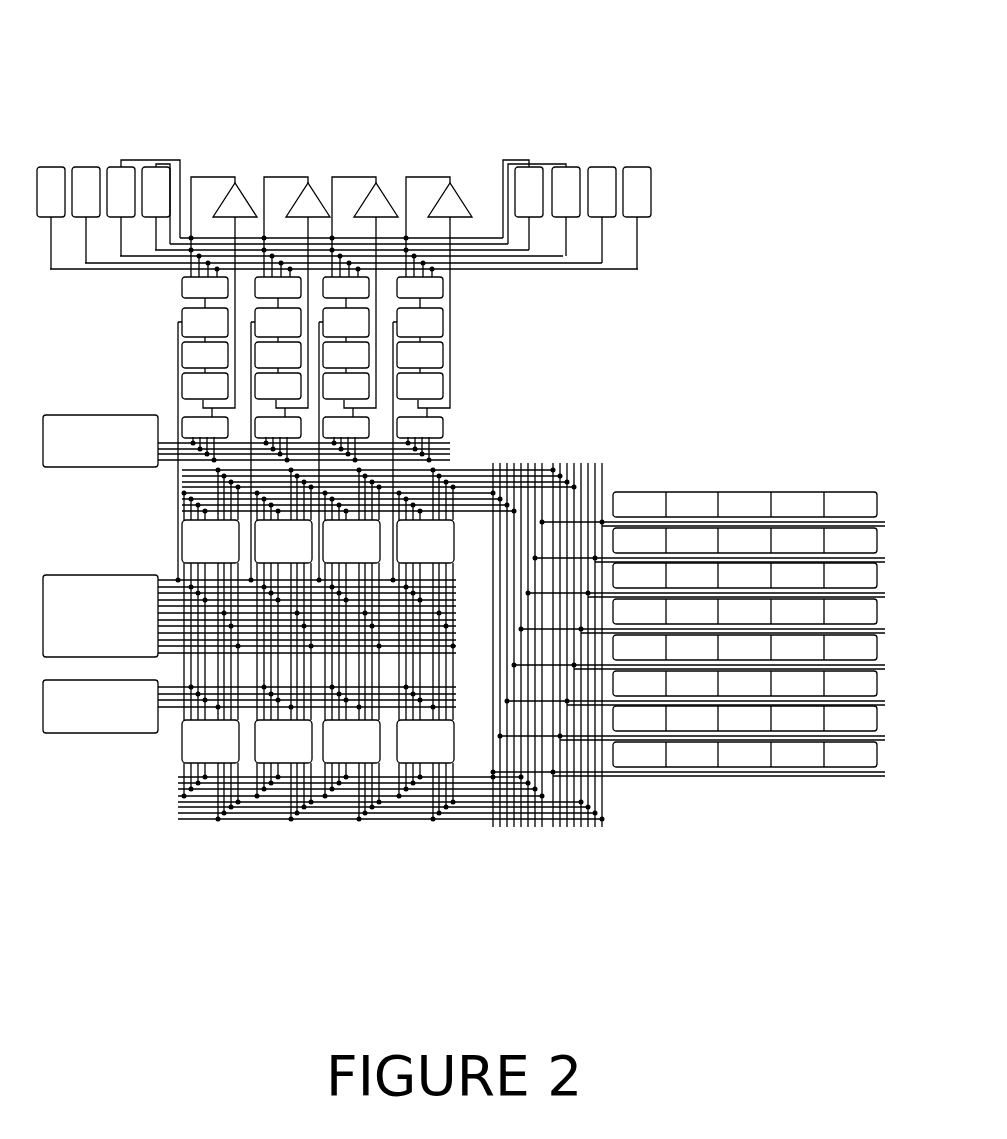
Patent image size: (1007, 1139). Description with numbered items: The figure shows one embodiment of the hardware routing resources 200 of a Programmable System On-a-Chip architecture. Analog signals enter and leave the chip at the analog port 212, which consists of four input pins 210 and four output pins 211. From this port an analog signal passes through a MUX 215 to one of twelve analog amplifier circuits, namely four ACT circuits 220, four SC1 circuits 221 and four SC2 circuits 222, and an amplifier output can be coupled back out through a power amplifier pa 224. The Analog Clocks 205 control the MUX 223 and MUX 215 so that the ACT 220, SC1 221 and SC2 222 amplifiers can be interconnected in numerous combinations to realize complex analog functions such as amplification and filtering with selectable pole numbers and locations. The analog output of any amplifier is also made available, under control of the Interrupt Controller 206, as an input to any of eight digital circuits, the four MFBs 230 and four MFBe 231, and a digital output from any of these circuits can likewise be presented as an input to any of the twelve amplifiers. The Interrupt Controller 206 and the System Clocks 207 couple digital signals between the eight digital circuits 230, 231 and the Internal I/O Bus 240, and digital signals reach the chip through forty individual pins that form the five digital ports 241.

The hardware routing resources 200 is at (48, 14).
The Analog Clocks 205 is at (76, 464).
The Interrupt Controller 206 is at (88, 650).
The System Clocks 207 is at (88, 729).
The input pins 210 is at (60, 167).
The output pins 211 is at (146, 167).
The port 0 212 is at (725, 193).
The MUX 215 is at (182, 288).
The ACT circuit 220 is at (182, 322).
The SC1 circuit 221 is at (182, 352).
The SC2 circuit 222 is at (182, 383).
The MUX 223 is at (182, 425).
The power amplifier pa 224 is at (242, 189).
The MFBs 230 is at (182, 537).
The MFBe 231 is at (398, 748).
The Internal I/O Bus 240 is at (615, 826).
The ports 0 through 4 241 is at (880, 408).